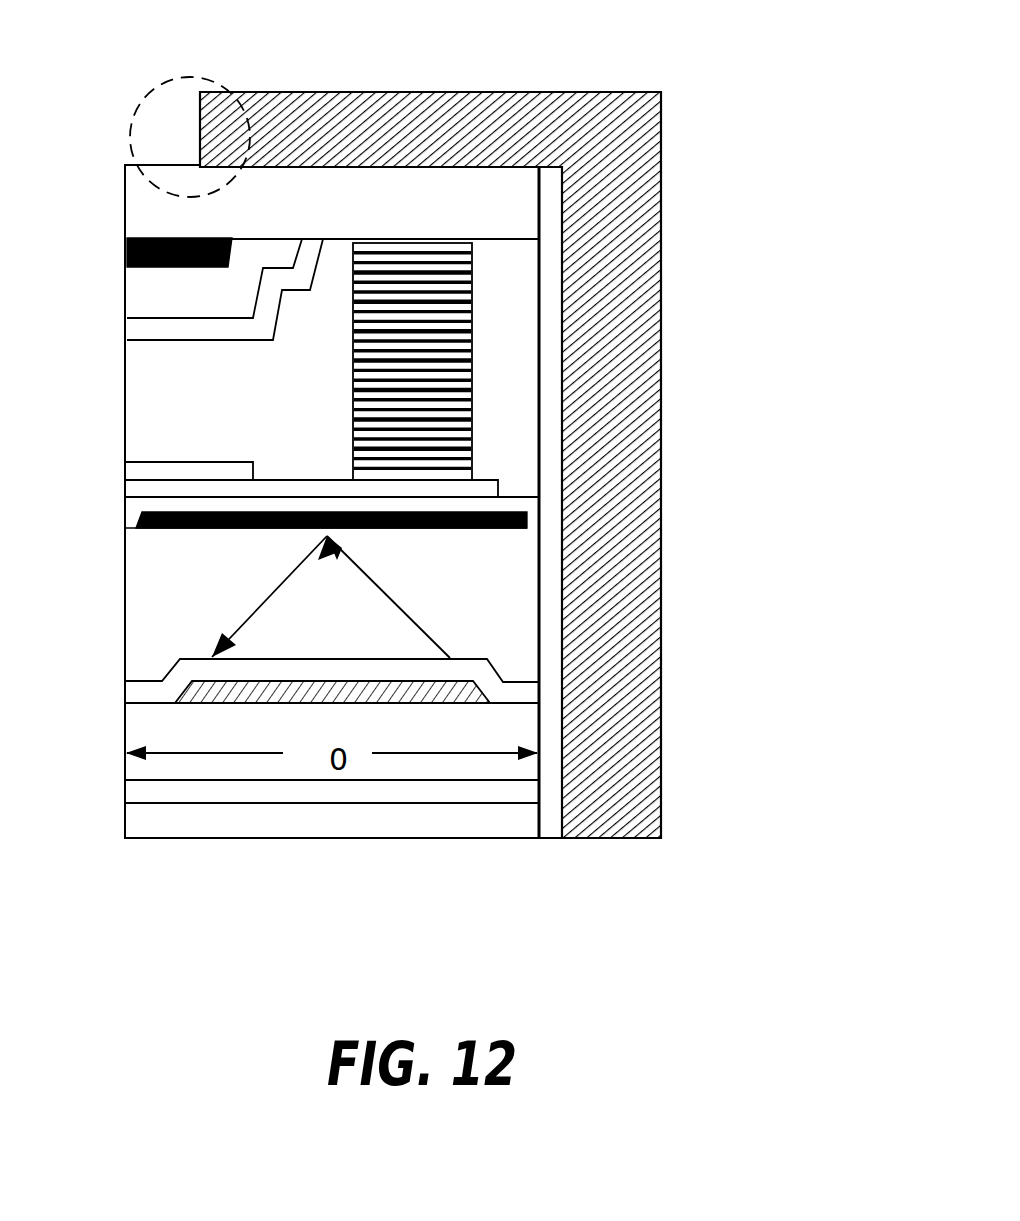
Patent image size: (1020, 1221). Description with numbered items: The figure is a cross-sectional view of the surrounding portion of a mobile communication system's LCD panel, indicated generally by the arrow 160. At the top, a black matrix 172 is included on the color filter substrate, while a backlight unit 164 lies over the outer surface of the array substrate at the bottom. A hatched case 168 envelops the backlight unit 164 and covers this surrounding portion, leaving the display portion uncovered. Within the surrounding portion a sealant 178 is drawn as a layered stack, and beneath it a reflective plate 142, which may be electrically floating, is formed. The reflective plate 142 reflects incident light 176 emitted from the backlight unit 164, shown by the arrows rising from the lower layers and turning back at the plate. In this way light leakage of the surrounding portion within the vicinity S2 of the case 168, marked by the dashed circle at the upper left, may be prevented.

The vicinity of the case S2 is at (130, 128).
The black matrix 172 is at (235, 237).
The case 168 is at (623, 233).
The sealant 178 is at (472, 372).
The device assembly 160 is at (748, 443).
The reflective plate 142 is at (527, 522).
The incident light 176 is at (420, 619).
The backlight unit 164 is at (255, 820).